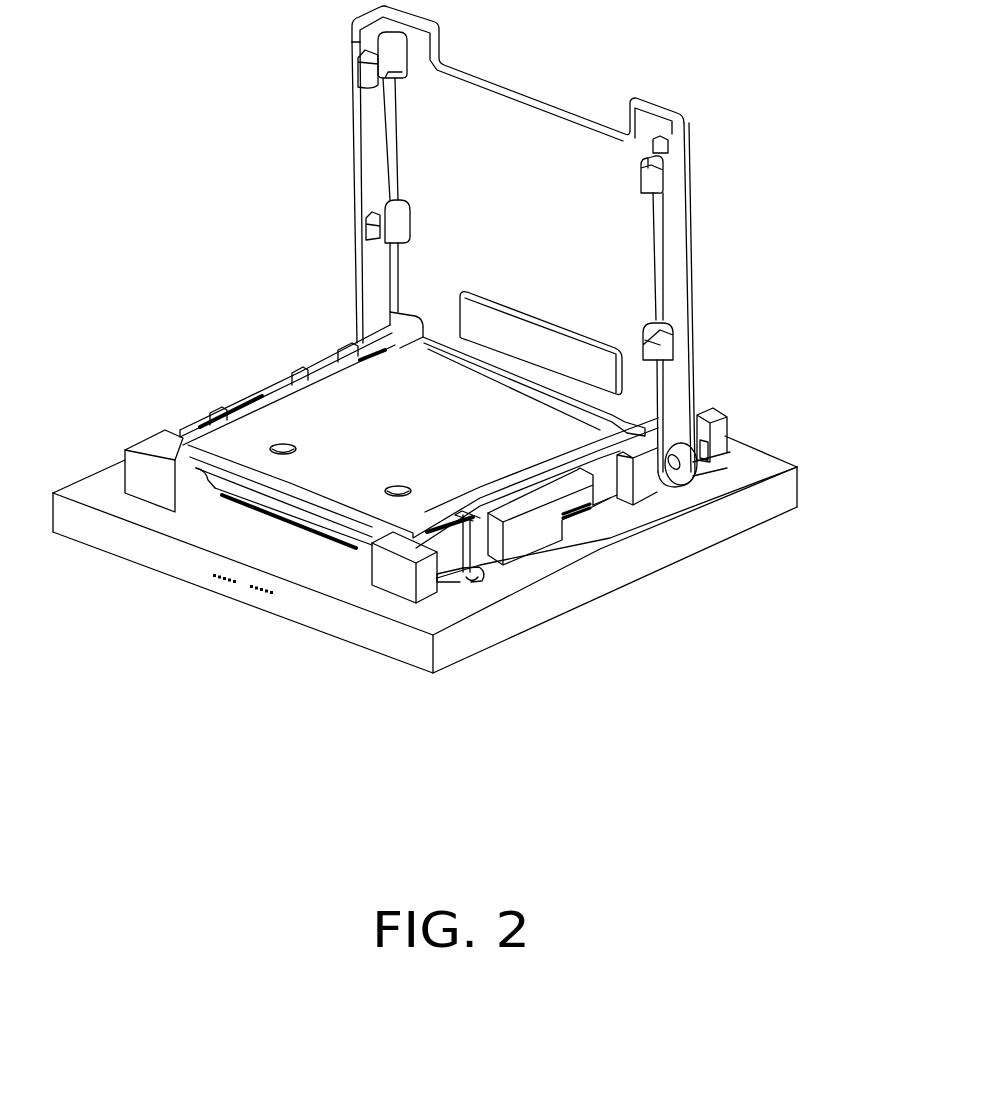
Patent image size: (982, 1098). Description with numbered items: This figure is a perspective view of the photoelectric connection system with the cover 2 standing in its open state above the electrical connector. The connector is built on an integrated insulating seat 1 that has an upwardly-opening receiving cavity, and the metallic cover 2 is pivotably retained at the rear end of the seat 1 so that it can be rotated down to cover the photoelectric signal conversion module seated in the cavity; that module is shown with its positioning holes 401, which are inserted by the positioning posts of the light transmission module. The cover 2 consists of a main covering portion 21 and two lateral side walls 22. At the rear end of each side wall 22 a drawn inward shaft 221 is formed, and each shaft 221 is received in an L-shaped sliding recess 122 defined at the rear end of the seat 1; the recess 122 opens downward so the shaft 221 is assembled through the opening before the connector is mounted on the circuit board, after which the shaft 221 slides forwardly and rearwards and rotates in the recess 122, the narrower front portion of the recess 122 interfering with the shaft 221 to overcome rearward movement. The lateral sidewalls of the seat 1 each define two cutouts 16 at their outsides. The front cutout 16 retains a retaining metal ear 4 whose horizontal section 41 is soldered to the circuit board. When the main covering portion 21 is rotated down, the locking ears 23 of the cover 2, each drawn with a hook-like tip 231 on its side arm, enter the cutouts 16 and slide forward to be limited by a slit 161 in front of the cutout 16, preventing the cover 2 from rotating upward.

The insulating seat 1 is at (454, 512).
The sliding recess 122 is at (722, 432).
The cutout 16 is at (614, 558).
The slit 161 is at (572, 527).
The cover 2 is at (523, 294).
The main covering portion 21 is at (552, 177).
The lateral side wall 22 is at (724, 353).
The inward shaft 221 is at (688, 466).
The locking ear 23 is at (325, 172).
The hook 231 is at (373, 225).
The retaining metal ear 4 is at (396, 533).
The positioning hole 401 is at (278, 443).
The horizontal section 41 is at (458, 583).